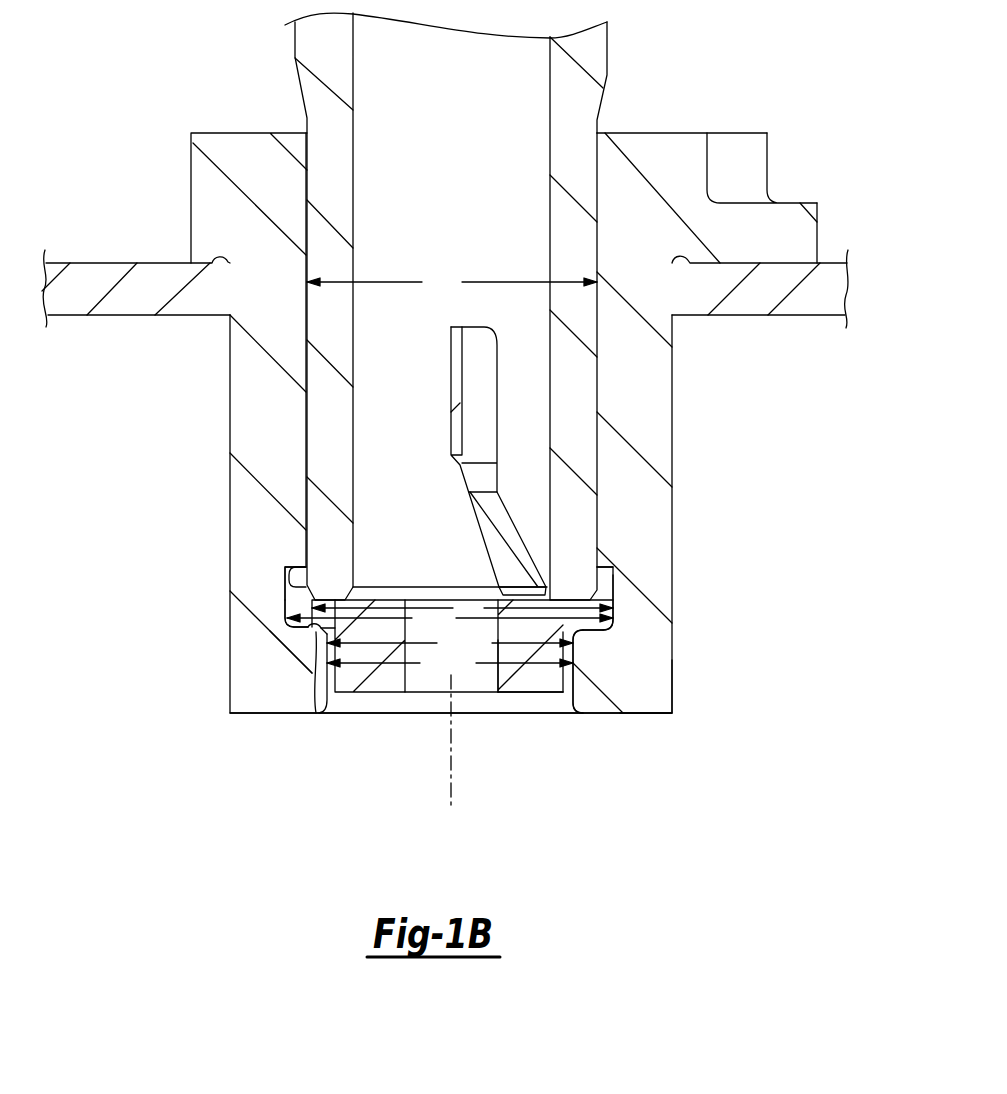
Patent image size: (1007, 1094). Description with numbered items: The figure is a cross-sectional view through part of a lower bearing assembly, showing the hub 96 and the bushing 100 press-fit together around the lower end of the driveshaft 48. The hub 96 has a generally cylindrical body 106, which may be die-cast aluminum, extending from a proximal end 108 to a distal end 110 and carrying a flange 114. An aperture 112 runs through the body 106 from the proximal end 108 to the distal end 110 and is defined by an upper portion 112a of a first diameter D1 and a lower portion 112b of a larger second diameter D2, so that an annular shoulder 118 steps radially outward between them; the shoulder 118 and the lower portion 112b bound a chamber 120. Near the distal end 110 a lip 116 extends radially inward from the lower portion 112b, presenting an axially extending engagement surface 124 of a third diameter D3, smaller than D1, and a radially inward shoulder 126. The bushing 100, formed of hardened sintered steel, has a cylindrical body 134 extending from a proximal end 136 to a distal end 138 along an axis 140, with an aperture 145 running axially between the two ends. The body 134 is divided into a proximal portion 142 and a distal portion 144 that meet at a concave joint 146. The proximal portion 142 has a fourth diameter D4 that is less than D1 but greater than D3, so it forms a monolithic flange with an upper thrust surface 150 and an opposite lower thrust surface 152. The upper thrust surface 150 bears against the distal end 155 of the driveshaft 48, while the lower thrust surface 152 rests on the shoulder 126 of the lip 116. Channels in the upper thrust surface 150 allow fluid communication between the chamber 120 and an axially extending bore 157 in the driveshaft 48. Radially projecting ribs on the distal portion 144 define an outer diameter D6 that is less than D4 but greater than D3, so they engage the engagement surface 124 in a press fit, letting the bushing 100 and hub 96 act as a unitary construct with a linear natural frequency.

The hub 96 is at (213, 668).
The driveshaft 48 is at (570, 380).
The bushing 100 is at (511, 694).
The body 106 is at (652, 433).
The proximal end 108 is at (670, 133).
The distal end 110 is at (665, 713).
The aperture 112 is at (307, 188).
The upper portion 112a is at (306, 262).
The lower portion 112b is at (297, 567).
The flange 114 is at (750, 213).
The lip 116 is at (316, 713).
The shoulder 118 is at (317, 555).
The chamber 120 is at (602, 600).
The engagement surface 124 is at (538, 680).
The shoulder 126 is at (317, 626).
The body 134 is at (573, 662).
The proximal end 136 is at (400, 600).
The distal end 138 is at (385, 692).
The axis 140 is at (451, 790).
The proximal portion 142 is at (547, 608).
The distal portion 144 is at (523, 680).
The aperture 145 is at (470, 685).
The joint 146 is at (573, 633).
The upper thrust surface 150 is at (602, 593).
The lower thrust surface 152 is at (310, 672).
The distal end 155 is at (300, 605).
The bore 157 is at (353, 435).
The first diameter D1 is at (452, 282).
The second diameter D2 is at (450, 620).
The third diameter D3 is at (450, 643).
The fourth diameter D4 is at (462, 606).
The outer diameter D6 is at (450, 663).